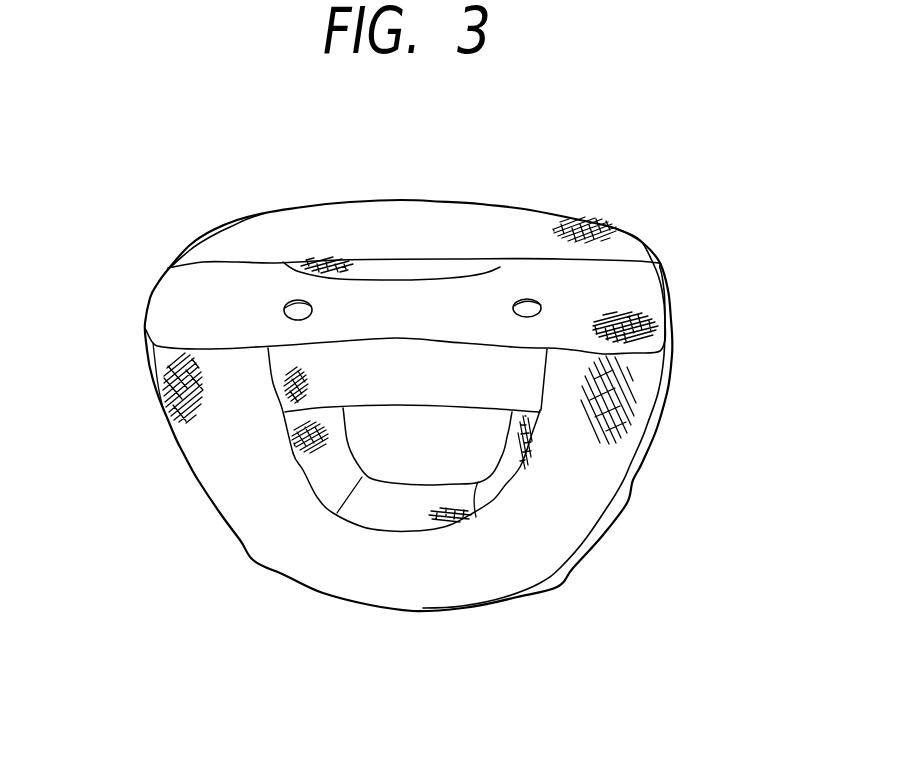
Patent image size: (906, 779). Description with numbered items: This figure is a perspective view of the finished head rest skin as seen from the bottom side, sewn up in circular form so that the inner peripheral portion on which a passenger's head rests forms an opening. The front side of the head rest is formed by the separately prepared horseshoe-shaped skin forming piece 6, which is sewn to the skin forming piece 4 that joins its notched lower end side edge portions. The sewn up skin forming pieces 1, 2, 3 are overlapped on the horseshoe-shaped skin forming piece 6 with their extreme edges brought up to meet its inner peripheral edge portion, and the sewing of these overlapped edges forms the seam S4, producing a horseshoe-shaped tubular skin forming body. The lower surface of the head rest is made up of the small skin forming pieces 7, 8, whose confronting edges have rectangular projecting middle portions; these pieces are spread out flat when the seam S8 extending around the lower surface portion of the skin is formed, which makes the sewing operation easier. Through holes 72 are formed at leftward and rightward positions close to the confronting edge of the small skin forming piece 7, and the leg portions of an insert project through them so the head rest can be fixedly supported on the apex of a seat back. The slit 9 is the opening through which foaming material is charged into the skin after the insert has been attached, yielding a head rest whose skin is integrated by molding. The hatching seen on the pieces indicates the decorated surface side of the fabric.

The skin forming piece 1 is at (405, 517).
The skin forming piece 2 is at (508, 472).
The skin forming piece 3 is at (333, 465).
The skin forming piece 4 is at (347, 373).
The horseshoe-shaped skin forming piece 6 is at (253, 495).
The small skin forming piece 7 is at (193, 312).
The small skin forming piece 8 is at (323, 223).
The slit 9 is at (418, 267).
The through holes 72 is at (290, 308).
The seam S8 is at (190, 245).
The seam S4 is at (447, 528).